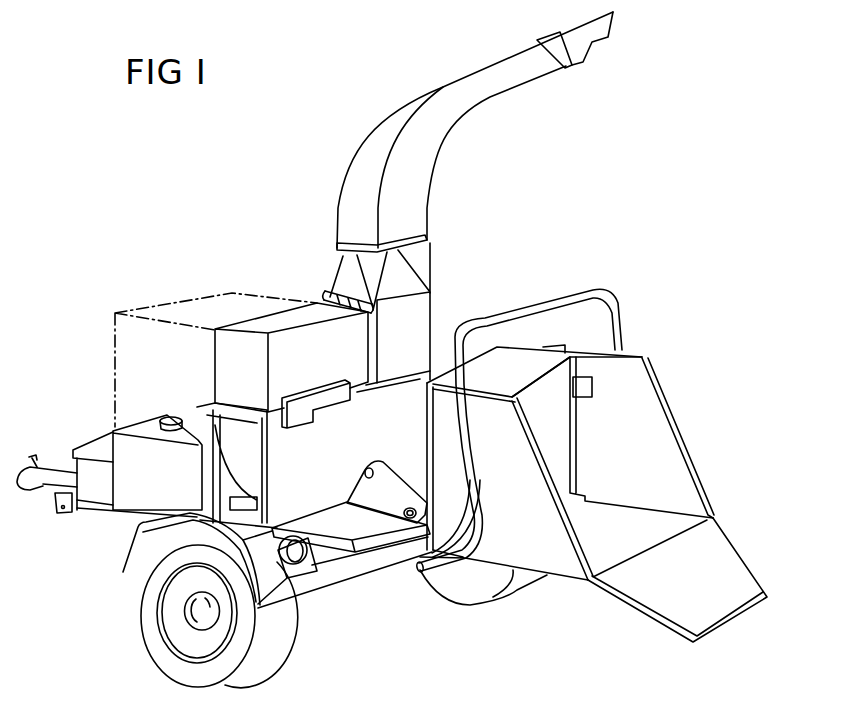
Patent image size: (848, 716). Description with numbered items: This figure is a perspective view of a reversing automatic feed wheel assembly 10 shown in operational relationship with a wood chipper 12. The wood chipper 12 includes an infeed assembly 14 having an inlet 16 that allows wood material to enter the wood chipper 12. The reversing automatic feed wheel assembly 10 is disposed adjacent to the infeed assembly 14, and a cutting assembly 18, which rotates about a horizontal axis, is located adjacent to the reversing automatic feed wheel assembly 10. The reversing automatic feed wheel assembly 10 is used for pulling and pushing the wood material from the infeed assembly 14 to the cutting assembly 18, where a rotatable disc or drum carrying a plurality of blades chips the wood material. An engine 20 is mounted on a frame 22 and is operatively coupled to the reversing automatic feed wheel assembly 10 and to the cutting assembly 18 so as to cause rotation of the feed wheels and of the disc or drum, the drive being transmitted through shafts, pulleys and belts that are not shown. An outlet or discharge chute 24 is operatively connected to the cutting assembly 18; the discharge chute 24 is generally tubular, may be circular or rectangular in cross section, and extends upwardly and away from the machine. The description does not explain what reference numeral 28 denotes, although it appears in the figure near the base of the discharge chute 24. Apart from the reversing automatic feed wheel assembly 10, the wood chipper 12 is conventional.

The reversing automatic feed wheel assembly 10 is at (414, 364).
The wood chipper 12 is at (195, 350).
The infeed assembly 14 is at (654, 470).
The inlet 16 is at (558, 392).
The cutting assembly 18 is at (227, 380).
The engine 20 is at (230, 292).
The frame 22 is at (325, 580).
The discharge chute 24 is at (397, 113).
The chute base 28 is at (347, 255).